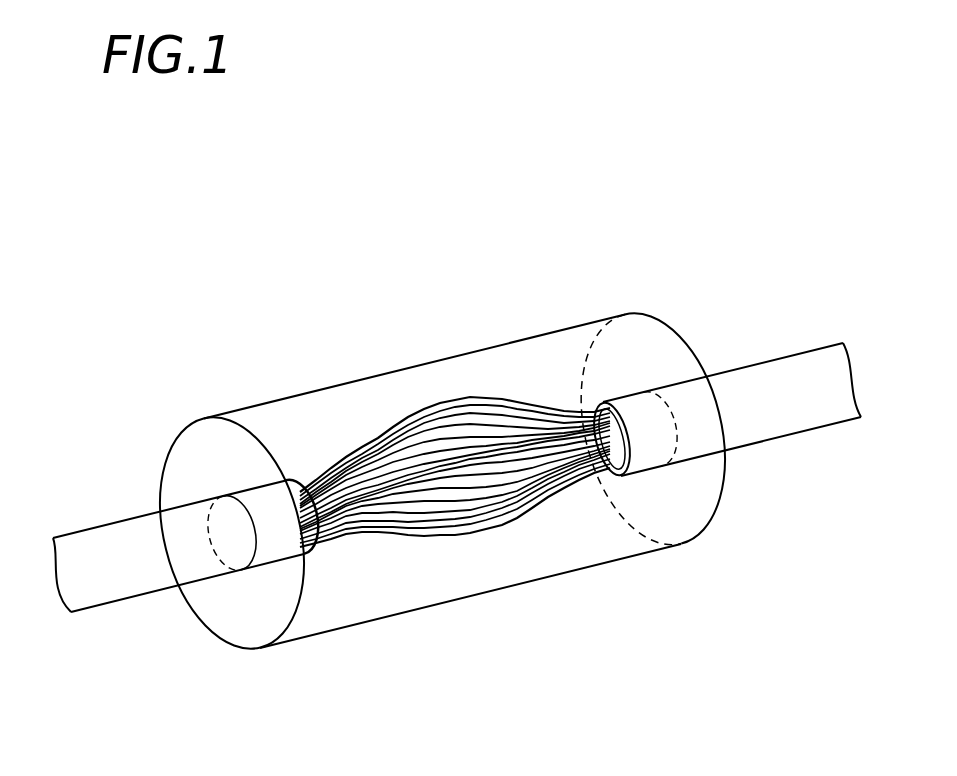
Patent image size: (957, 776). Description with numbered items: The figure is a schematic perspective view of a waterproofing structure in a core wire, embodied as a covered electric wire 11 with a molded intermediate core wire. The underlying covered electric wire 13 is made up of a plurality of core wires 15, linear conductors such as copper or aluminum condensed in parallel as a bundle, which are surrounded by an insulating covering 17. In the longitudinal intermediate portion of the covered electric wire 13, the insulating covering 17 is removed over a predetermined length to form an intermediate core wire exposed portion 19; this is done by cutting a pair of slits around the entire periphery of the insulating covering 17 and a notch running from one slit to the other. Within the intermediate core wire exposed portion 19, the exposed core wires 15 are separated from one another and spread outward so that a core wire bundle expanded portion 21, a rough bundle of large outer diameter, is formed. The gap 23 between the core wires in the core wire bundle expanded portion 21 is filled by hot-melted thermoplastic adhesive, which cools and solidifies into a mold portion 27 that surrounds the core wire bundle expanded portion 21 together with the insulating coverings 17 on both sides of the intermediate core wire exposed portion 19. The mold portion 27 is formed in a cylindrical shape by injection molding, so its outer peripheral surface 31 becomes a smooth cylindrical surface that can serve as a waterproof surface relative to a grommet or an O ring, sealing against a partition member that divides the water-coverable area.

The covered electric wire with molded intermediate core wire 11 is at (457, 452).
The covered electric wire 13 is at (457, 472).
The core wire 15 is at (455, 463).
The insulating covering 17 is at (140, 580).
The intermediate core wire exposed portion 19 is at (473, 498).
The core wire bundle expanded portion 21 is at (443, 397).
The gap 23 is at (388, 454).
The mold portion 27 is at (443, 455).
The outer peripheral surface 31 is at (570, 352).